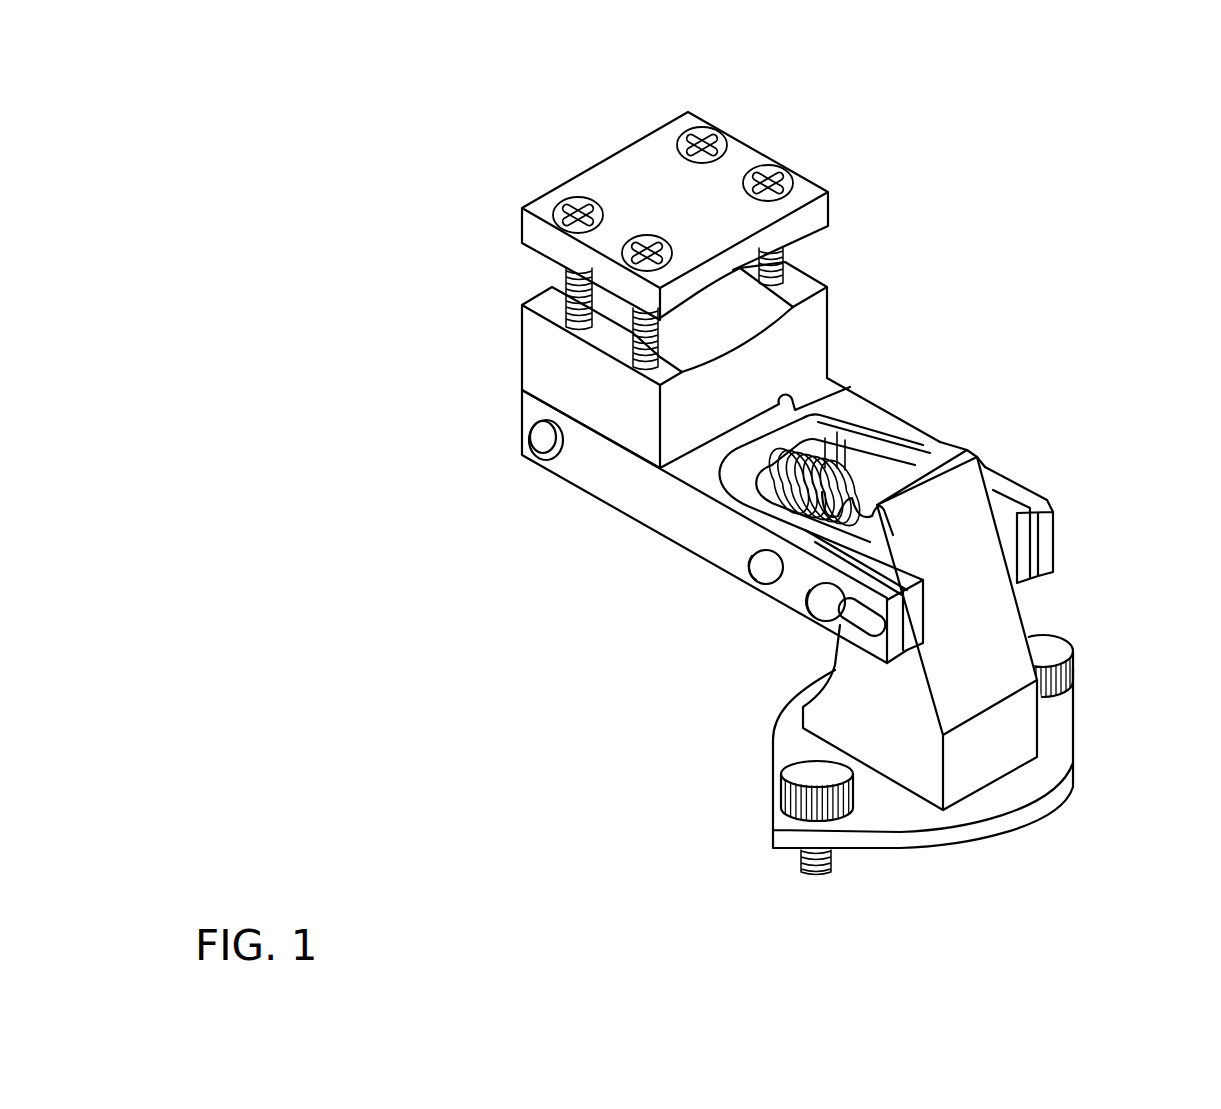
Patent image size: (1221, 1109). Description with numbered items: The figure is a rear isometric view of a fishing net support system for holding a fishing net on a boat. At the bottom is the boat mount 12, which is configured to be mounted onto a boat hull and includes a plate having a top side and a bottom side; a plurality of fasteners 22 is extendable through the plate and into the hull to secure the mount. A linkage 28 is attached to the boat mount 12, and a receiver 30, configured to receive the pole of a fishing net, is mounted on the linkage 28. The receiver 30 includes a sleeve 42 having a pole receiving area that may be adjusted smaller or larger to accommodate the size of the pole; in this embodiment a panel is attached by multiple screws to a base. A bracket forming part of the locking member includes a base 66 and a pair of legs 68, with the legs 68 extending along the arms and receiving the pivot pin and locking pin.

The boat mount 12 is at (1128, 768).
The fasteners 22 is at (807, 783).
The linkage 28 is at (967, 402).
The receiver 30 is at (891, 172).
The sleeve 42 is at (763, 313).
The base 66 is at (712, 446).
The legs 68 is at (767, 495).